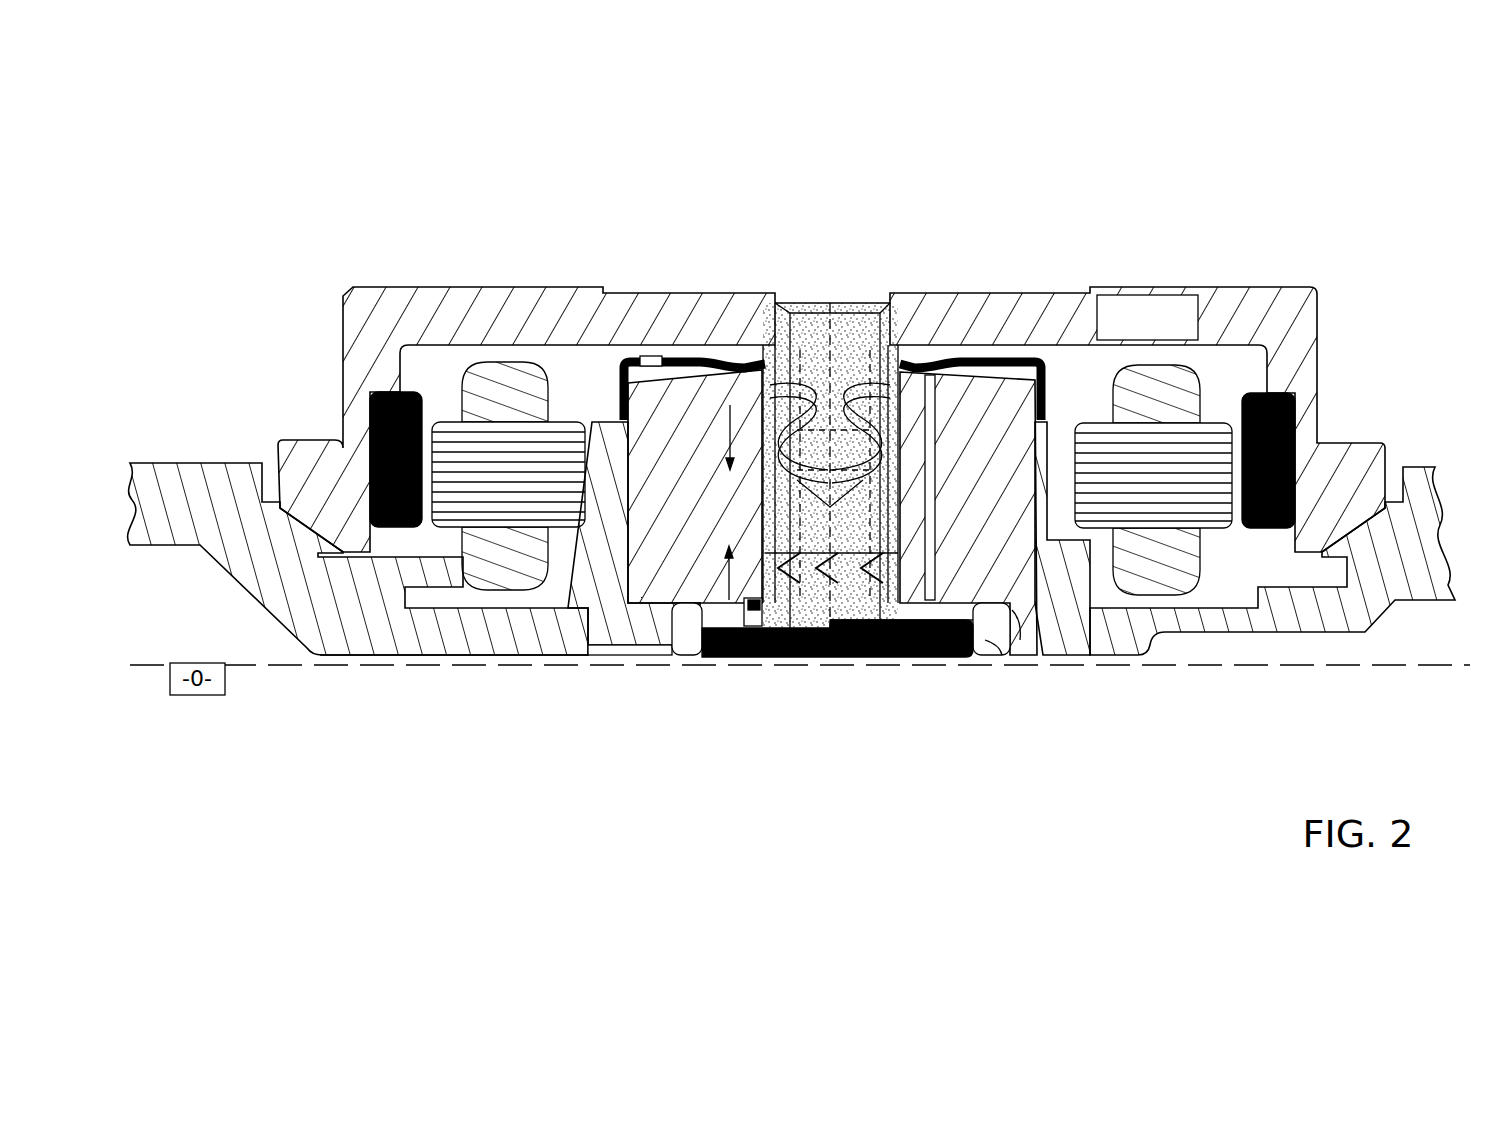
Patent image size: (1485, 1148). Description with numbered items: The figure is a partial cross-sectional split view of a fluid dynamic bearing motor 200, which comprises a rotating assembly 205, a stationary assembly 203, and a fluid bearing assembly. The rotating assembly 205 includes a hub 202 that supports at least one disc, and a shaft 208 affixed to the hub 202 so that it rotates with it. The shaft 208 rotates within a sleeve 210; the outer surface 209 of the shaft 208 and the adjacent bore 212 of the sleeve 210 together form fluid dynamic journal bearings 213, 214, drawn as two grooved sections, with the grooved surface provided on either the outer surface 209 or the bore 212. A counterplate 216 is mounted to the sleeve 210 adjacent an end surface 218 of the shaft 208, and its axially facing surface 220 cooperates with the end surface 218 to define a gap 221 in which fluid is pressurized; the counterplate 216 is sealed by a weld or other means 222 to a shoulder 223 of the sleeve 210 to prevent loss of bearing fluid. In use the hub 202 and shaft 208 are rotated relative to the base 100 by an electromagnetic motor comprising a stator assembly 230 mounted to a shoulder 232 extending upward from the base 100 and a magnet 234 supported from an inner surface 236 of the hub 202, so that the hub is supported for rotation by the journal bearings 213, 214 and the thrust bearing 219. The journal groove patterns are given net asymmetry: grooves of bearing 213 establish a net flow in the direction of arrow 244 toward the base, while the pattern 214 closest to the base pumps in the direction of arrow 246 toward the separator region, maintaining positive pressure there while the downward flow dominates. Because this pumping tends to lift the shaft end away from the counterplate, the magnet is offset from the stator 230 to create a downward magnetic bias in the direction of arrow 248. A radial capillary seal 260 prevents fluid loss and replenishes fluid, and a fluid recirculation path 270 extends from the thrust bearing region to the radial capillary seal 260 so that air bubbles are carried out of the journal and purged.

The base 100 is at (343, 617).
The motor 200 is at (994, 171).
The hub 202 is at (368, 326).
The stationary assembly 203 is at (396, 660).
The rotating assembly 205 is at (469, 272).
The shaft 208 is at (850, 325).
The outer surface of the shaft 209 is at (742, 345).
The sleeve 210 is at (643, 573).
The bore of sleeve 212 is at (758, 615).
The fluid dynamic journal bearing 213 is at (816, 423).
The fluid dynamic journal bearing 214 is at (813, 575).
The counterplate 216 is at (947, 640).
The end surface of the shaft 218 is at (778, 663).
The thrust bearing 219 is at (910, 655).
The axially facing surface 220 is at (872, 660).
The gap 221 is at (852, 610).
The weld or other means 222 is at (995, 645).
The shoulder of sleeve 223 is at (1020, 640).
The stator assembly 230 is at (1153, 450).
The shoulder 232 is at (1073, 588).
The magnet 234 is at (1268, 527).
The inner surface of the hub 236 is at (1295, 443).
The arrow 244 is at (727, 425).
The arrow 246 is at (707, 605).
The arrow 248 is at (1338, 372).
The radial capillary seal 260 is at (1040, 372).
The fluid recirculation path 270 is at (940, 640).